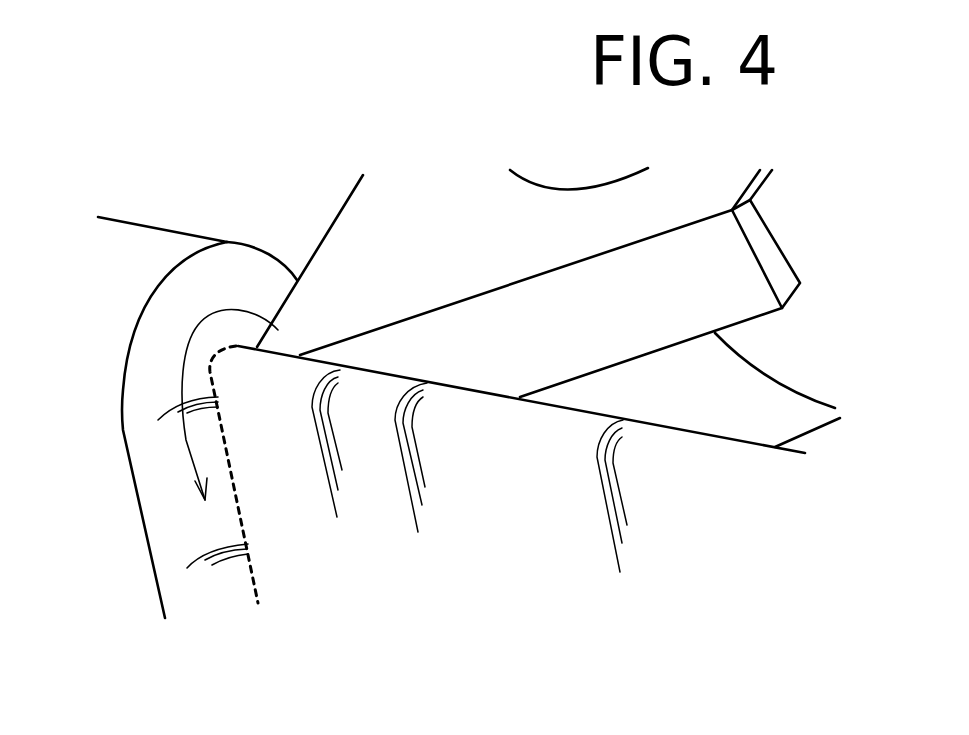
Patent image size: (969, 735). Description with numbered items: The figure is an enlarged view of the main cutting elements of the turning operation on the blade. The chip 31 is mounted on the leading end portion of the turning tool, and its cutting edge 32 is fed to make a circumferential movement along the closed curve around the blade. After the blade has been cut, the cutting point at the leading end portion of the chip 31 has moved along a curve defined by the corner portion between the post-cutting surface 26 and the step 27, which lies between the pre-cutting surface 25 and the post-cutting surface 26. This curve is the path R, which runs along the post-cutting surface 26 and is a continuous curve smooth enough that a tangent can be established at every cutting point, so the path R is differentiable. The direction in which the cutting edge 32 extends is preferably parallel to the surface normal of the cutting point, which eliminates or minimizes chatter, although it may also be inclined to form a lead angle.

The pre-cutting surface 25 is at (103, 278).
The post-cutting surface 26 is at (668, 493).
The step 27 is at (158, 445).
The chip 31 is at (397, 213).
The cutting edge 32 is at (318, 247).
The path R is at (253, 578).